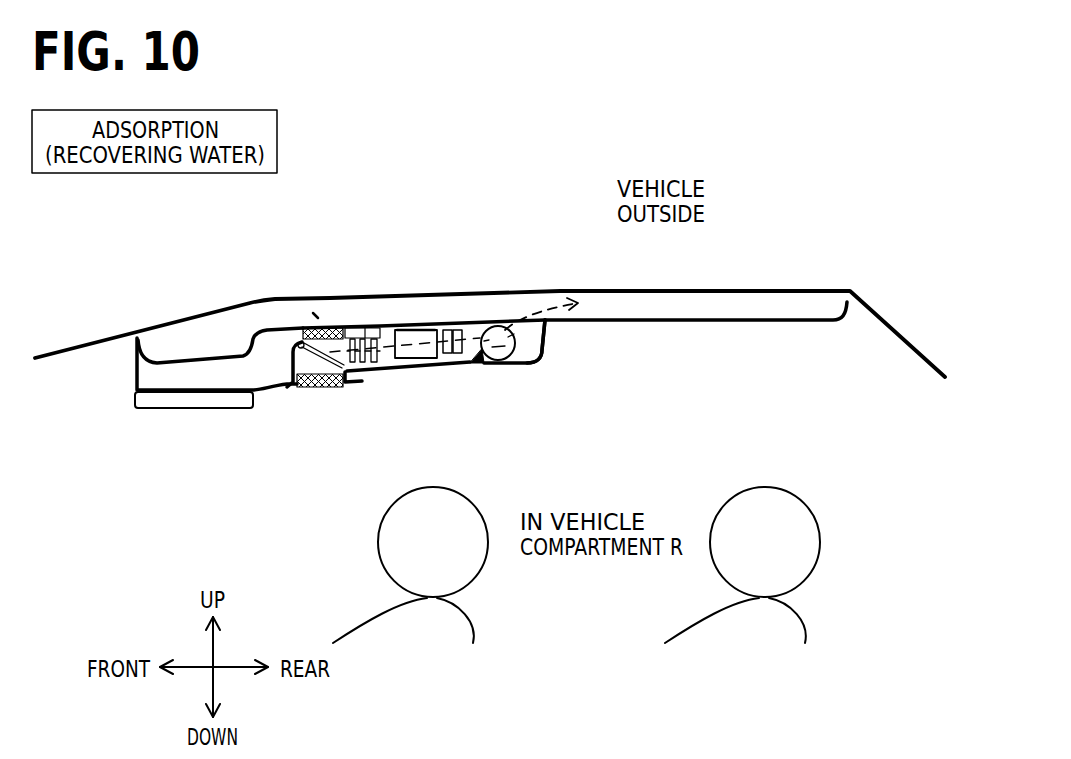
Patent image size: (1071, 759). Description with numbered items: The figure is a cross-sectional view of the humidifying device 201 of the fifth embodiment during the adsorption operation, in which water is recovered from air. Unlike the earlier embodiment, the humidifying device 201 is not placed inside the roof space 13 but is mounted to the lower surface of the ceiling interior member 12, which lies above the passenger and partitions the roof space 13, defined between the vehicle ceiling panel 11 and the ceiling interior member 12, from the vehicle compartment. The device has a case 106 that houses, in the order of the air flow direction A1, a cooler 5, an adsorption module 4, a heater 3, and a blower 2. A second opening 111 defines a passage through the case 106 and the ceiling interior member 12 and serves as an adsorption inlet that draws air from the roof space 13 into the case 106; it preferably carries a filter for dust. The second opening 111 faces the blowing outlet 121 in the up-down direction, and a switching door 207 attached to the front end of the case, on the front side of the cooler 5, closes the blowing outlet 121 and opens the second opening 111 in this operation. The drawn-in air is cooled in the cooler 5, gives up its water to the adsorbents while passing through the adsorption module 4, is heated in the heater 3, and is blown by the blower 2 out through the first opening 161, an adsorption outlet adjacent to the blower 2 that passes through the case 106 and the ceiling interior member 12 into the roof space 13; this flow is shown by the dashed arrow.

The blower 2 is at (500, 325).
The heater 3 is at (456, 330).
The adsorption module 4 is at (423, 328).
The cooler 5 is at (366, 327).
The vehicle ceiling panel 11 is at (566, 290).
The ceiling interior member 12 is at (577, 320).
The roof space 13 is at (682, 307).
The case 106 is at (408, 330).
The second opening 111 is at (337, 327).
The blowing outlet 121 is at (297, 388).
The first opening 161 is at (538, 323).
The humidifying device 201 is at (427, 389).
The switching door 207 is at (303, 326).
The direction A1 is at (482, 327).